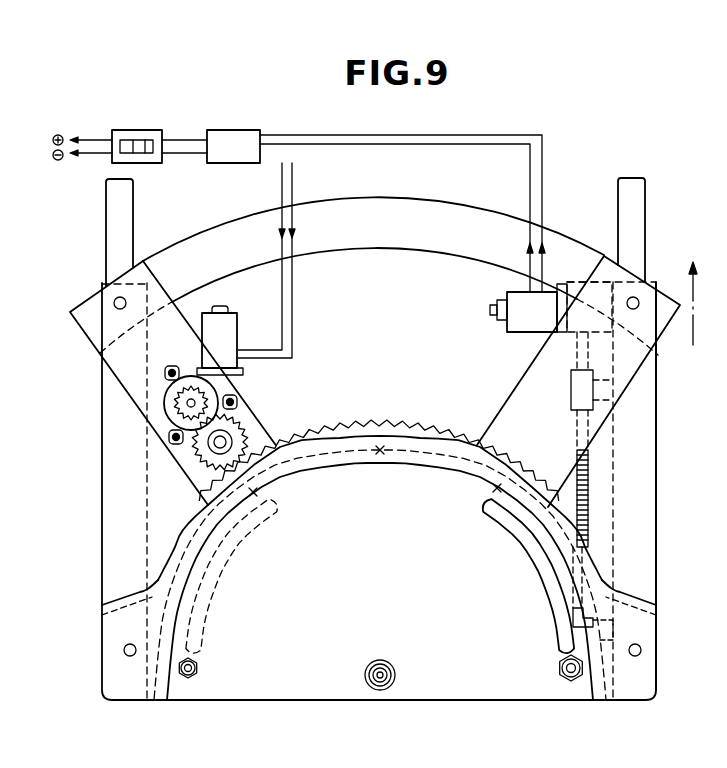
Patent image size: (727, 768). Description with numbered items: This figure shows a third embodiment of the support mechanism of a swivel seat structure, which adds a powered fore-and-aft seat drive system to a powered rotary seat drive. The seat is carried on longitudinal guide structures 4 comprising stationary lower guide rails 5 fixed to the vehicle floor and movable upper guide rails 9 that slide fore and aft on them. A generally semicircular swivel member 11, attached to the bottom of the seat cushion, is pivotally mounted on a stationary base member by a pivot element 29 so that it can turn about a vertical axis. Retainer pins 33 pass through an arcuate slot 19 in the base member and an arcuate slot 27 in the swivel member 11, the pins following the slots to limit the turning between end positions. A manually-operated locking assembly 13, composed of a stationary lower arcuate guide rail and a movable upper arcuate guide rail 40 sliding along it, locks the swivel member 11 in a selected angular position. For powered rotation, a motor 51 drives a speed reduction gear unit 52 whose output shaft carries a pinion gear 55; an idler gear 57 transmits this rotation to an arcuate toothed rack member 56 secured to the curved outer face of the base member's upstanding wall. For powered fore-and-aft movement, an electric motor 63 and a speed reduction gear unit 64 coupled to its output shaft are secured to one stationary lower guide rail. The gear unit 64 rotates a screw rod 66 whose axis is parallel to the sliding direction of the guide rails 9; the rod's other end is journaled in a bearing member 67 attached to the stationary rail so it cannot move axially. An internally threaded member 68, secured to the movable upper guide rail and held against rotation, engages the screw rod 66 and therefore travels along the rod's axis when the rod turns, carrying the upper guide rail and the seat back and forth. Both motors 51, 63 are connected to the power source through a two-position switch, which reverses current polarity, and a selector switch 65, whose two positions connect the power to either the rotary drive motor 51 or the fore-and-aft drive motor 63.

The longitudinal guide structure 4 is at (101, 463).
The stationary lower guide rail 5 is at (106, 219).
The movable upper guide rail 9 is at (101, 392).
The swivel member 11 is at (300, 702).
The manually-operated locking assembly 13 is at (470, 207).
The arcuate slot 19 is at (231, 556).
The arcuate slot 27 is at (537, 577).
The pivot element 29 is at (394, 669).
The retainer pin 33 is at (200, 671).
The movable upper arcuate guide rail 40 is at (391, 253).
The motor 51 is at (238, 326).
The speed reduction gear unit 52 is at (163, 406).
The pinion gear 55 is at (236, 398).
The arcuate toothed rack member 56 is at (406, 422).
The idler gear 57 is at (248, 421).
The electric motor 63 is at (525, 333).
The speed reduction gear unit 64 is at (573, 292).
The selector switch 65 is at (232, 164).
The screw rod 66 is at (591, 513).
The bearing member 67 is at (567, 632).
The internally threaded member 68 is at (570, 385).